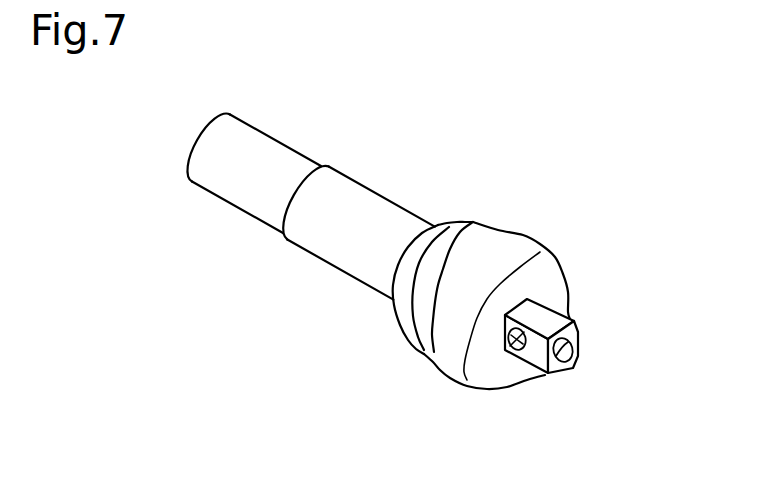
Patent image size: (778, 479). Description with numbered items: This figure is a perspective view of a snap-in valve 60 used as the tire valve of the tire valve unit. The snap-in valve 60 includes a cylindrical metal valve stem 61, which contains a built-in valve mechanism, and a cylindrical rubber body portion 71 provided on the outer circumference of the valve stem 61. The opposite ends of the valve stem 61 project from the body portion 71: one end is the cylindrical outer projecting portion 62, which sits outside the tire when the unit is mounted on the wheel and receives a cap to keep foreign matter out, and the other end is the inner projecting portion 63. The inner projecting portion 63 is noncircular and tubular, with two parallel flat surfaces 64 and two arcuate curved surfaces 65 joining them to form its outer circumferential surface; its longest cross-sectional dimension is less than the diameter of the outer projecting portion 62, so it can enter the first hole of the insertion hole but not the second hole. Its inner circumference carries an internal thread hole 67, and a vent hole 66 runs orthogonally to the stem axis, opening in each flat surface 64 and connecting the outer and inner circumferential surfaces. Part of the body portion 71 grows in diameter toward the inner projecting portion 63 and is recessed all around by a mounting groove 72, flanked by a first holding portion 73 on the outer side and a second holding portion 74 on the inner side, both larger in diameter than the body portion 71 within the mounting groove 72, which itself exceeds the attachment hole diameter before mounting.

The snap-in valve 60 is at (535, 158).
The valve stem 61 is at (297, 150).
The outer projecting portion 62 is at (253, 203).
The body portion 71 is at (392, 197).
The mounting groove 72 is at (484, 231).
The first holding portion 73 is at (470, 227).
The second holding portion 74 is at (520, 247).
The inner projecting portion 63 is at (568, 315).
The flat surfaces 64 is at (580, 342).
The curved surfaces 65 is at (541, 303).
The vent hole 66 is at (512, 353).
The internal thread hole 67 is at (574, 365).